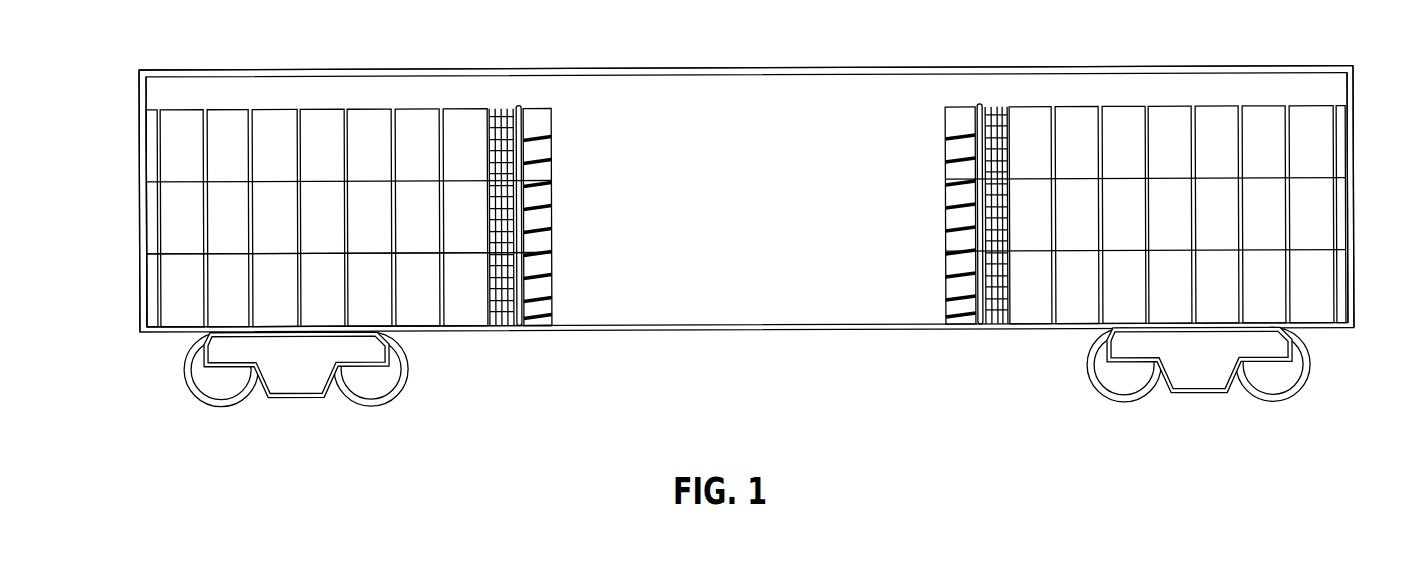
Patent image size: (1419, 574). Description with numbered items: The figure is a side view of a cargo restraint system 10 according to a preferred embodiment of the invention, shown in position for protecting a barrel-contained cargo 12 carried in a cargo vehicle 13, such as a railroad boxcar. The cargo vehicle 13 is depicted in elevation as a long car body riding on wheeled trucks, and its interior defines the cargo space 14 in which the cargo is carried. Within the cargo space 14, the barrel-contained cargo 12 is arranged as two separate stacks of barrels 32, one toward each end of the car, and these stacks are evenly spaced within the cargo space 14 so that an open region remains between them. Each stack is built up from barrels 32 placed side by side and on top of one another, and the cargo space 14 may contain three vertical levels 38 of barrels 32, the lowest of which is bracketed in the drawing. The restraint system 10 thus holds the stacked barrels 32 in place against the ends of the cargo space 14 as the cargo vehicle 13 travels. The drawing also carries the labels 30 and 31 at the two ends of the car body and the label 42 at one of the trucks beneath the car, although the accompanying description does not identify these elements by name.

The cargo restraint system 10 is at (575, 194).
The barrel-contained cargo 12 is at (349, 175).
The cargo vehicle 13 is at (640, 71).
The cargo space 14 is at (806, 110).
The first end wall 30 is at (139, 140).
The second end wall 31 is at (1353, 158).
The barrels 32 is at (425, 109).
The vertical levels 38 is at (131, 255).
The truck assembly 42 is at (405, 380).